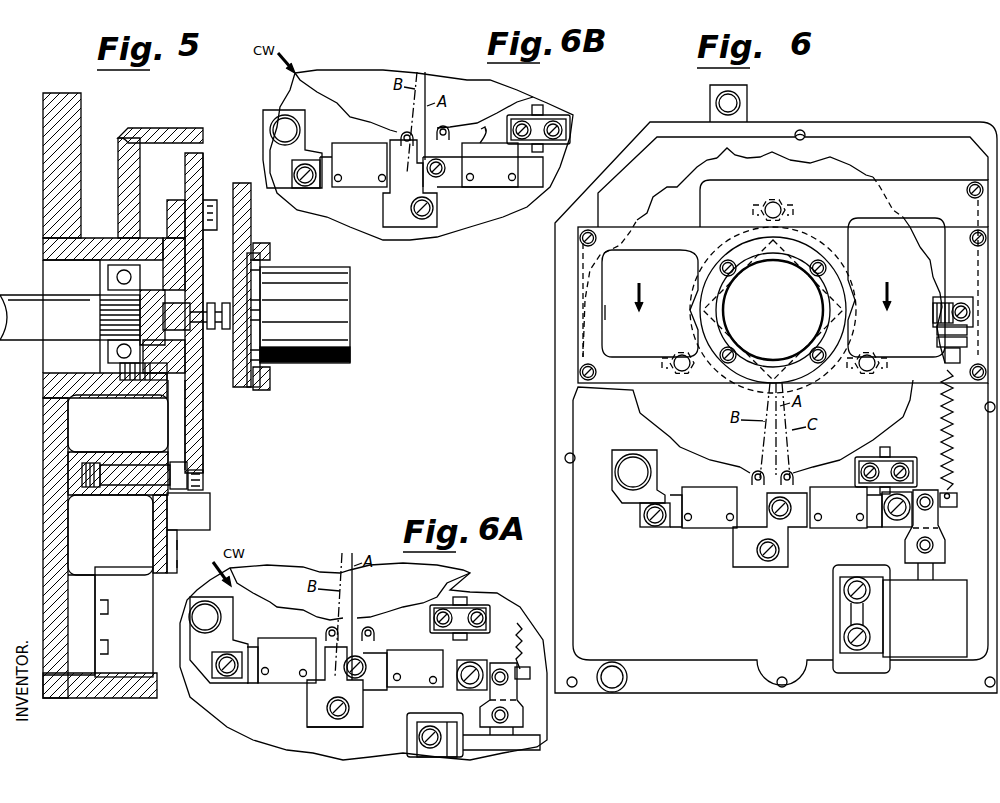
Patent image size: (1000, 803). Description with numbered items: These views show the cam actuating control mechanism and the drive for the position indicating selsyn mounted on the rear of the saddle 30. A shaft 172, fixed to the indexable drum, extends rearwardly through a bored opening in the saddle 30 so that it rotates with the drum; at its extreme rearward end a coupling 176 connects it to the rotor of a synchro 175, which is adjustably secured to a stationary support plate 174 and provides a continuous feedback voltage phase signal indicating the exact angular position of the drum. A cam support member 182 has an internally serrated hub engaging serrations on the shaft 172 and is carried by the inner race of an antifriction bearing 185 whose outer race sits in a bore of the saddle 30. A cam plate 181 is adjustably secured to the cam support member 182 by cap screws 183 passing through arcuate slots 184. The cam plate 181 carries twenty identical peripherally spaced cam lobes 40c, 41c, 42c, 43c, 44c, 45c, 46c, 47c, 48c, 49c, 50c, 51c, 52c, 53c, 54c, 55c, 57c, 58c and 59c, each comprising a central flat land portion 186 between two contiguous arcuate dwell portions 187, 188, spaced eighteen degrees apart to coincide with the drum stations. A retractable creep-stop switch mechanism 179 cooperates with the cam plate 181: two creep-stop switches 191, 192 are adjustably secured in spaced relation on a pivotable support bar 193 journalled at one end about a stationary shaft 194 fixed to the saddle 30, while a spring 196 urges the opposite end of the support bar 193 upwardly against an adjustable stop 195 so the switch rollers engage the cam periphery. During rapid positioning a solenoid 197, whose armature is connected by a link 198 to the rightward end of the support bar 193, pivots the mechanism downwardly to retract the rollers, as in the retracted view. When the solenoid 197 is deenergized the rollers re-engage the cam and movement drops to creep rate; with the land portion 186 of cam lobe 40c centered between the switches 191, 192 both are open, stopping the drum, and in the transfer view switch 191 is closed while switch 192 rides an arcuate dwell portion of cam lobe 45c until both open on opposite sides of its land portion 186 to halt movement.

In FIG. 5, the saddle 30 is at (48, 473).
In FIG. 6B, the saddle 30 is at (441, 238).
In FIG. 6A, the saddle 30 is at (250, 720).
In FIG. 6, the saddle 30 is at (760, 616).
In FIG. 5, the cam lobe 40c is at (212, 481).
In FIG. 6, the cam lobe 40c is at (757, 494).
In FIG. 6, the cam lobe 41c is at (703, 473).
In FIG. 6, the cam lobe 42c is at (677, 448).
In FIG. 6A, the cam lobe 43c is at (385, 623).
In FIG. 6, the cam lobe 43c is at (645, 429).
In FIG. 6B, the cam lobe 44c is at (508, 143).
In FIG. 6A, the cam lobe 44c is at (320, 627).
In FIG. 6, the cam lobe 44c is at (606, 400).
In FIG. 6B, the cam lobe 45c is at (386, 151).
In FIG. 6A, the cam lobe 45c is at (275, 609).
In FIG. 6, the cam lobe 45c is at (599, 315).
In FIG. 6B, the cam lobe 46c is at (351, 124).
In FIG. 6, the cam lobe 46c is at (604, 270).
In FIG. 6, the cam lobe 47c is at (645, 213).
In FIG. 6, the cam lobe 48c is at (688, 181).
In FIG. 6, the cam lobe 49c is at (726, 153).
In FIG. 6, the cam lobe 50c is at (775, 150).
In FIG. 6, the cam lobe 51c is at (834, 160).
In FIG. 6, the cam lobe 52c is at (877, 176).
In FIG. 6, the cam lobe 53c is at (913, 211).
In FIG. 6, the cam lobe 54c is at (940, 254).
In FIG. 6, the cam lobe 55c is at (945, 290).
In FIG. 6, the cam lobe 57c is at (911, 410).
In FIG. 6, the cam lobe 58c is at (881, 444).
In FIG. 6, the cam lobe 59c is at (812, 466).
In FIG. 5, the shaft 172 is at (62, 326).
In FIG. 5, the stationary support plate 174 is at (242, 235).
In FIG. 5, the synchro 175 is at (305, 270).
In FIG. 5, the coupling 176 is at (221, 294).
In FIG. 6B, the retractable creep-stop switch mechanism 179 is at (378, 202).
In FIG. 6A, the retractable creep-stop switch mechanism 179 is at (318, 736).
In FIG. 6, the retractable creep-stop switch mechanism 179 is at (730, 553).
In FIG. 5, the cam plate 181 is at (204, 453).
In FIG. 6, the cam plate 181 is at (830, 178).
In FIG. 5, the cam support member 182 is at (178, 200).
In FIG. 6, the cap screws 183 is at (762, 212).
In FIG. 6, the arcuate slots 184 is at (786, 212).
In FIG. 5, the antifriction bearing 185 is at (108, 277).
In FIG. 6, the central flat land portion 186 is at (788, 464).
In FIG. 6, the arcuate dwell portion 187 is at (737, 474).
In FIG. 6, the arcuate dwell portion 188 is at (866, 509).
In FIG. 5, the creep-stop switch 191 is at (200, 513).
In FIG. 6B, the creep-stop switch 191 is at (345, 190).
In FIG. 6A, the creep-stop switch 191 is at (290, 676).
In FIG. 6, the creep-stop switch 191 is at (697, 527).
In FIG. 6B, the creep-stop switch 192 is at (480, 190).
In FIG. 6A, the creep-stop switch 192 is at (418, 688).
In FIG. 6, the creep-stop switch 192 is at (828, 528).
In FIG. 6, the pivotable support bar 193 is at (633, 515).
In FIG. 5, the stationary shaft 194 is at (130, 468).
In FIG. 6B, the stationary shaft 194 is at (280, 128).
In FIG. 6A, the stationary shaft 194 is at (197, 617).
In FIG. 6, the stationary shaft 194 is at (620, 472).
In FIG. 6B, the adjustable stop 195 is at (540, 127).
In FIG. 6A, the adjustable stop 195 is at (465, 620).
In FIG. 6, the adjustable stop 195 is at (888, 472).
In FIG. 6A, the spring 196 is at (530, 621).
In FIG. 6, the spring 196 is at (952, 482).
In FIG. 6, the solenoid 197 is at (922, 650).
In FIG. 6, the link 198 is at (935, 534).